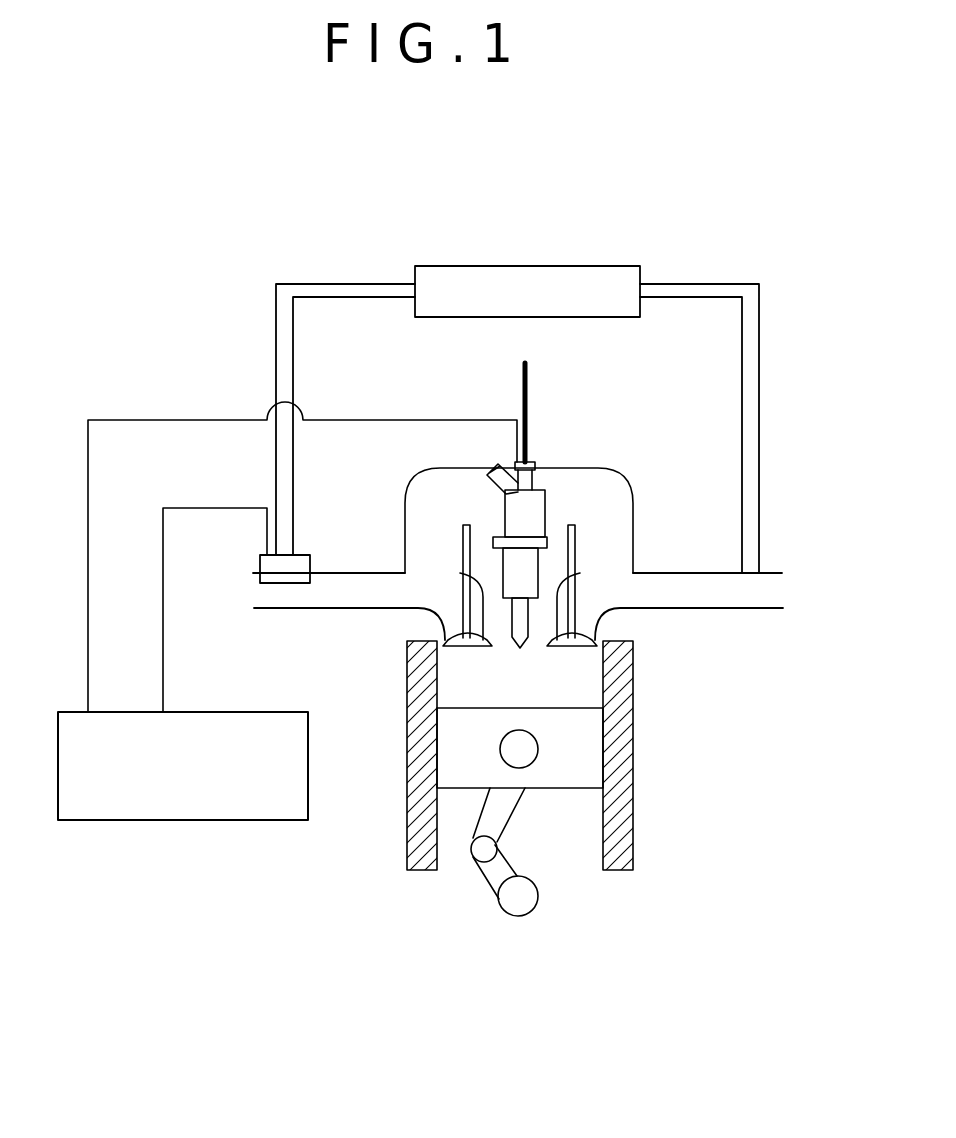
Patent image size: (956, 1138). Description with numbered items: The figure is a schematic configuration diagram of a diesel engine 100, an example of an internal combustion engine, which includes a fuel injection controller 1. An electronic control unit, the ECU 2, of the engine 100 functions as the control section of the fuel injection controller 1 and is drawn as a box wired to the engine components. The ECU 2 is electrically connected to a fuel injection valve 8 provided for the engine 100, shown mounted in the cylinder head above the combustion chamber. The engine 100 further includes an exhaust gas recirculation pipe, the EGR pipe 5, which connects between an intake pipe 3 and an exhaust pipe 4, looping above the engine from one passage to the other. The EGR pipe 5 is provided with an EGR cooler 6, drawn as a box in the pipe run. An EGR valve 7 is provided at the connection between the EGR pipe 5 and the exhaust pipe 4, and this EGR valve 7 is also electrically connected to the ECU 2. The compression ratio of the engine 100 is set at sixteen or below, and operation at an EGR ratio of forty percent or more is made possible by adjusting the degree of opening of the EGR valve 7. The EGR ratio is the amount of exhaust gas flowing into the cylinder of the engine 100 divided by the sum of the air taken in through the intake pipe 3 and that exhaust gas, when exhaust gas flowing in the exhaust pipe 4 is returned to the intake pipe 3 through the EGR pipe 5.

The fuel injection controller 1 is at (117, 389).
The electronic control unit (ECU) 2 is at (62, 822).
The intake pipe 3 is at (771, 572).
The exhaust pipe 4 is at (343, 609).
The EGR pipe 5 is at (762, 402).
The EGR cooler 6 is at (614, 266).
The EGR valve 7 is at (310, 551).
The fuel injection valve 8 is at (540, 494).
The engine 100 is at (684, 905).